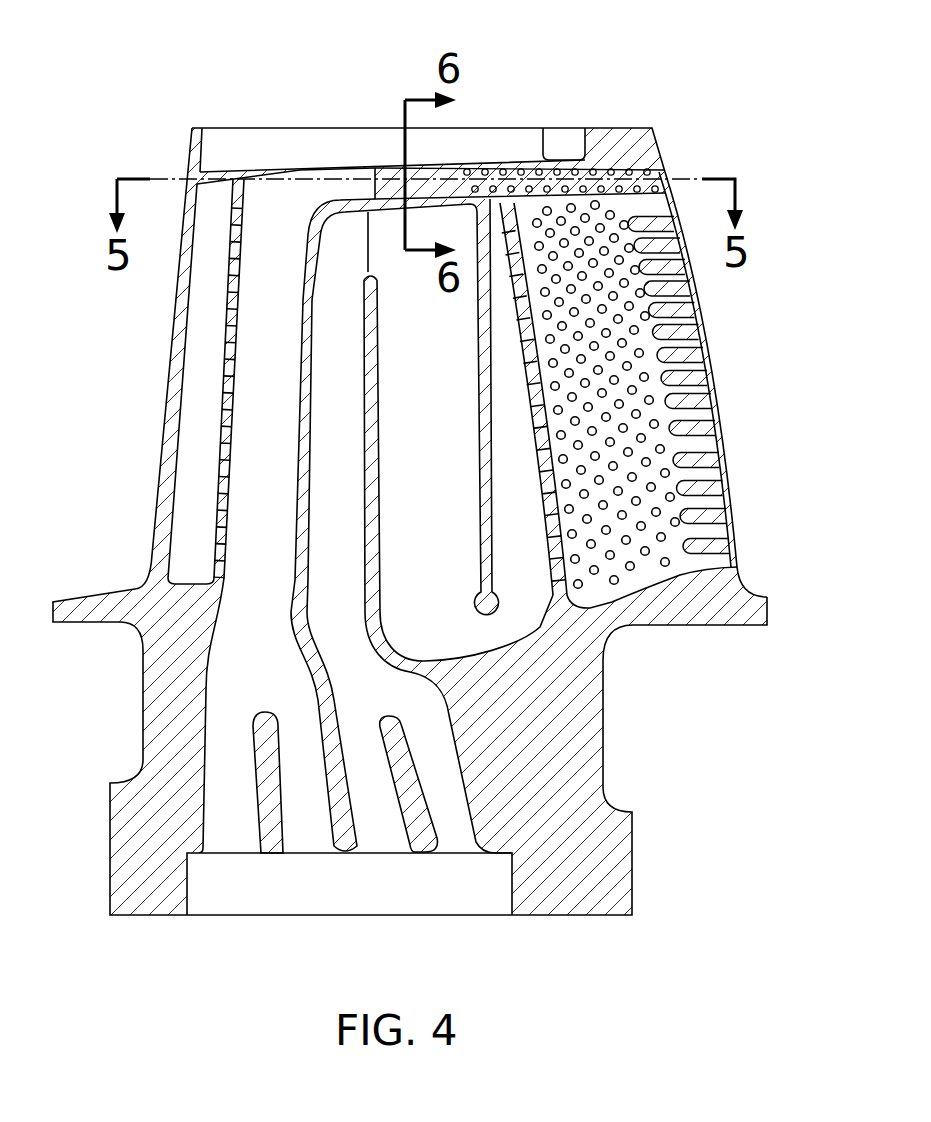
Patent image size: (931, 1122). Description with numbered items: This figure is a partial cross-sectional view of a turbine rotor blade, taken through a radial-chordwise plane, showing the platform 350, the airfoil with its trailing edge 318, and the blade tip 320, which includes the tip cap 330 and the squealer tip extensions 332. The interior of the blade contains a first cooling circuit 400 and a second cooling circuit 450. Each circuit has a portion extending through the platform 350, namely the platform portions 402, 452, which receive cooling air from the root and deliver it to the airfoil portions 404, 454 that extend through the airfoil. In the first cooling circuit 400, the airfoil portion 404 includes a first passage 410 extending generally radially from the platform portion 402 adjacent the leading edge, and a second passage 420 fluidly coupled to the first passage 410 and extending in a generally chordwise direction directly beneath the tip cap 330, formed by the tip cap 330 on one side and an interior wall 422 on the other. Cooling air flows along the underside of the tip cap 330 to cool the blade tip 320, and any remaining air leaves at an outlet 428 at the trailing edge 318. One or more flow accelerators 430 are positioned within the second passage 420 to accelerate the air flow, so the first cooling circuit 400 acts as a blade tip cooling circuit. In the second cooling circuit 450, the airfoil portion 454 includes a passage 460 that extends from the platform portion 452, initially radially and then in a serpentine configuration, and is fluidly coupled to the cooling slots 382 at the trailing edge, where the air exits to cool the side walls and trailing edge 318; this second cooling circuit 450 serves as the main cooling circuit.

The trailing edge 318 is at (703, 325).
The blade tip 320 is at (679, 111).
The tip cap 330 is at (543, 160).
The squealer tip extensions 332 is at (190, 142).
The platform 350 is at (147, 907).
The cooling slots 382 is at (707, 392).
The first cooling circuit 400 is at (271, 343).
The platform portion 402 is at (222, 732).
The airfoil portion 404 is at (253, 473).
The first passage 410 is at (238, 552).
The second passage 420 is at (317, 192).
The interior wall 422 is at (523, 193).
The outlet 428 is at (663, 173).
The flow accelerators 430 is at (437, 180).
The second cooling circuit 450 is at (326, 396).
The platform portion 452 is at (472, 803).
The airfoil portion 454 is at (323, 437).
The passage 460 is at (393, 220).